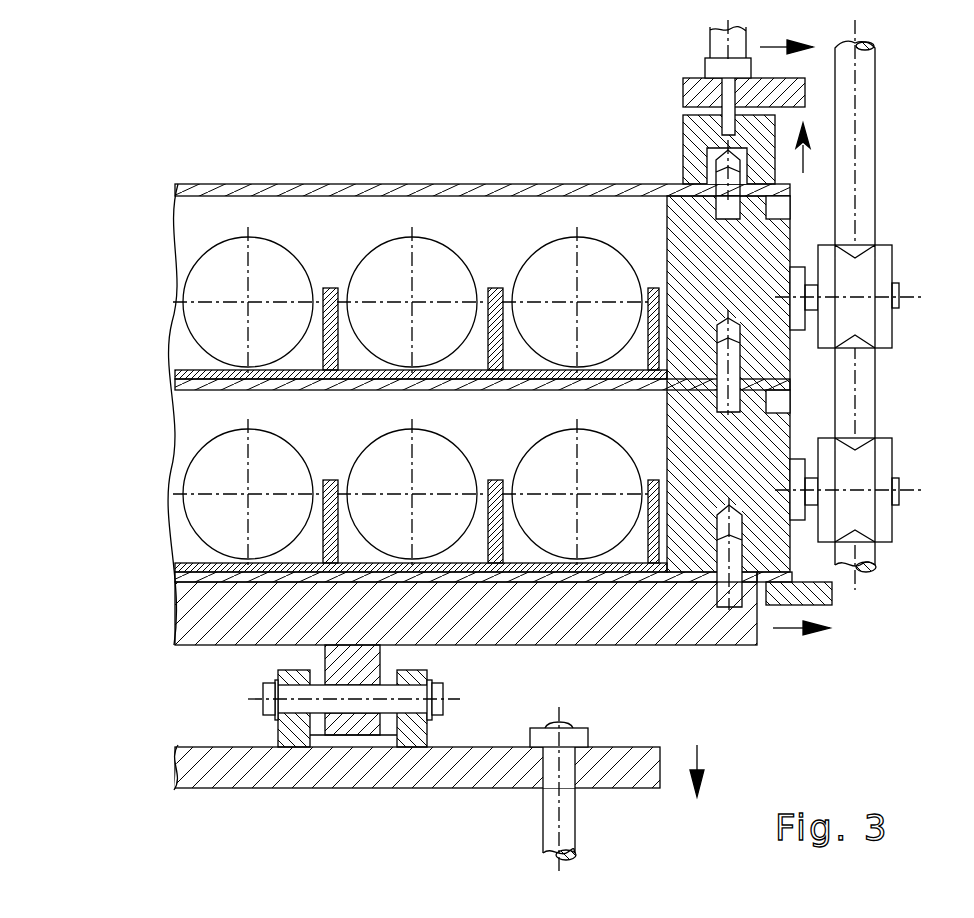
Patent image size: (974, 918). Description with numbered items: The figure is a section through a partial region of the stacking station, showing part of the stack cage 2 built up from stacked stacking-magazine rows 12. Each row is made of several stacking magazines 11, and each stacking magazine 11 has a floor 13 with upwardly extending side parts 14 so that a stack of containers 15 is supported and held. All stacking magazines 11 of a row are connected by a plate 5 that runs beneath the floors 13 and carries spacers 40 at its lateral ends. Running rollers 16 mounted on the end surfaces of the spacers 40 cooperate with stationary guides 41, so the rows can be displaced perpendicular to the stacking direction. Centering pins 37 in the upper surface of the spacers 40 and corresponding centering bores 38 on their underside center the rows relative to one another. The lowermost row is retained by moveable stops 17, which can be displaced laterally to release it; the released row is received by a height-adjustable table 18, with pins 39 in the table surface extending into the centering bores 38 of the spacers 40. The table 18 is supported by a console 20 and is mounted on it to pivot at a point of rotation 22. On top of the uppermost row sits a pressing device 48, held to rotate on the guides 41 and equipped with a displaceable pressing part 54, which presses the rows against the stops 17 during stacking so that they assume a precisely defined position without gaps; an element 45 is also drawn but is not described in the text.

The stack cage 2 is at (540, 117).
The plate 5 is at (175, 385).
The stacking magazine 11 is at (175, 375).
The stacking-magazine row 12 is at (362, 398).
The floor 13 is at (637, 582).
The side parts 14 is at (655, 518).
The stack of containers 15 is at (537, 437).
The running rollers 16 is at (868, 462).
The moveable stops 17 is at (832, 598).
The table 18 is at (697, 622).
The console 20 is at (427, 772).
The point of rotation 22 is at (447, 697).
The centering pins 37 is at (723, 397).
The centering bores 38 is at (742, 332).
The pins 39 is at (737, 608).
The spacers 40 is at (765, 433).
The stationary guides 41 is at (858, 387).
The plate end 45 is at (792, 570).
The pressing device 48 is at (690, 70).
The displaceable pressing part 54 is at (690, 147).